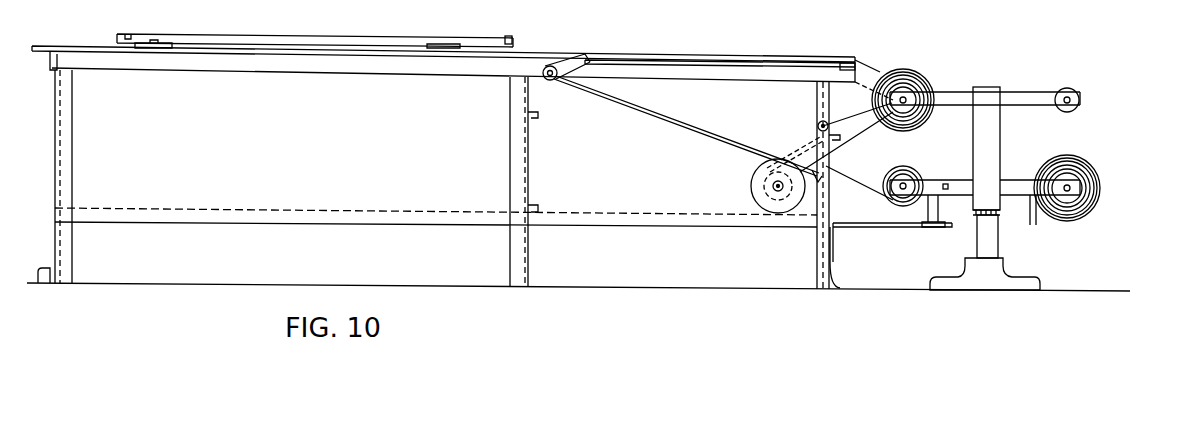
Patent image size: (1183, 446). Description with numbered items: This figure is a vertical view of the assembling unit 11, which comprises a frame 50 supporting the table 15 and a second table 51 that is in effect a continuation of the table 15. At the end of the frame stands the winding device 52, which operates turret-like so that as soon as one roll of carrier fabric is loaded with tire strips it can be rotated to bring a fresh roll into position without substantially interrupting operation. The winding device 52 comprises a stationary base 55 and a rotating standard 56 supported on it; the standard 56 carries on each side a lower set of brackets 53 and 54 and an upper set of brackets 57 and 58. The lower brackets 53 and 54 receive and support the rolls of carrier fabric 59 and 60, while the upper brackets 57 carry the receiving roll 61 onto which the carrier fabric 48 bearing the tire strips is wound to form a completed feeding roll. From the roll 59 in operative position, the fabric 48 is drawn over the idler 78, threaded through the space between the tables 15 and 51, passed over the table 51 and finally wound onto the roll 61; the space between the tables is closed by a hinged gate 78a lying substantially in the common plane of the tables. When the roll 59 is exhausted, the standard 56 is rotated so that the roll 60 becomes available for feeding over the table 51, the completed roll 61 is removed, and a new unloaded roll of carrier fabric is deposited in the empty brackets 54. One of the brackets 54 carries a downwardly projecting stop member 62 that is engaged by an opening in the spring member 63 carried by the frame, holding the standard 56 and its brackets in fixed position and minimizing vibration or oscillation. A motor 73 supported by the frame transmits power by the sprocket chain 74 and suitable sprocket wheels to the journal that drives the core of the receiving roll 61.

The assembling unit 11 is at (578, 168).
The table 15 is at (240, 55).
The carrier fabric 48 is at (641, 117).
The frame 50 is at (335, 181).
The second table 51 is at (719, 63).
The winding device 52 is at (983, 85).
The lower bracket 53 is at (945, 183).
The lower bracket 54 is at (1019, 185).
The stationary base 55 is at (1001, 271).
The rotating standard 56 is at (1001, 138).
The upper bracket 57 is at (948, 106).
The upper bracket 58 is at (1033, 98).
The roll of carrier fabric 59 is at (905, 173).
The roll of carrier fabric 60 is at (1101, 190).
The completed feeding roll 61 is at (918, 72).
The stop member 62 is at (928, 217).
The spring member 63 is at (865, 226).
The motor 73 is at (762, 194).
The sprocket chain 74 is at (790, 160).
The idler 78 is at (554, 82).
The hinged gate 78a is at (566, 47).